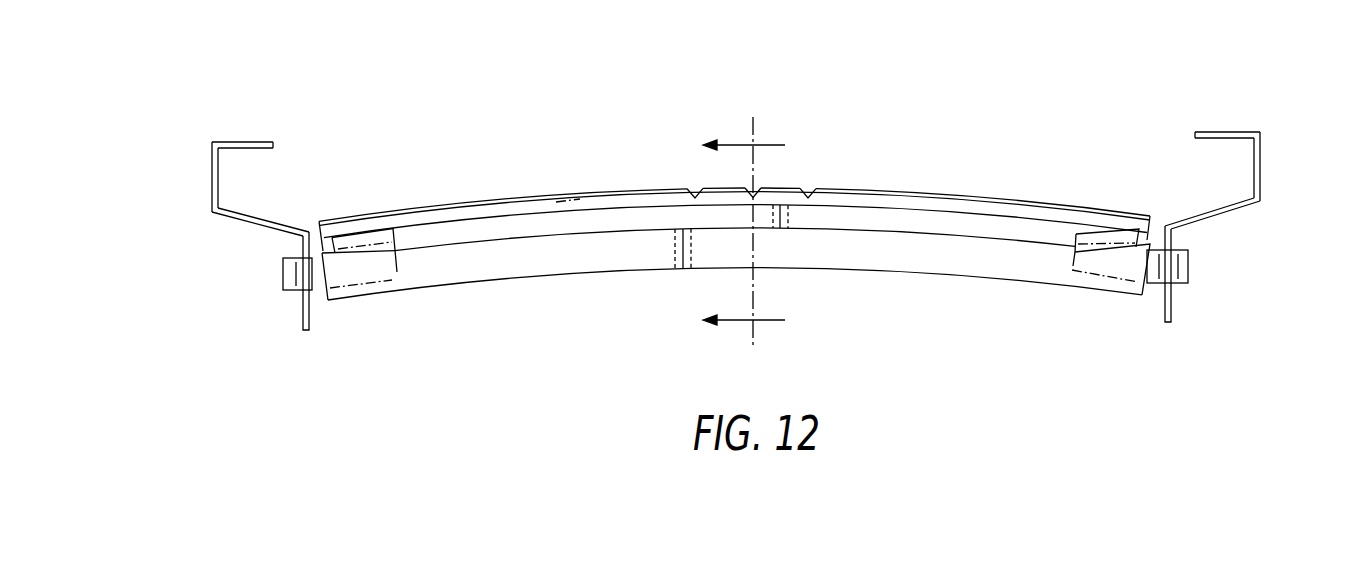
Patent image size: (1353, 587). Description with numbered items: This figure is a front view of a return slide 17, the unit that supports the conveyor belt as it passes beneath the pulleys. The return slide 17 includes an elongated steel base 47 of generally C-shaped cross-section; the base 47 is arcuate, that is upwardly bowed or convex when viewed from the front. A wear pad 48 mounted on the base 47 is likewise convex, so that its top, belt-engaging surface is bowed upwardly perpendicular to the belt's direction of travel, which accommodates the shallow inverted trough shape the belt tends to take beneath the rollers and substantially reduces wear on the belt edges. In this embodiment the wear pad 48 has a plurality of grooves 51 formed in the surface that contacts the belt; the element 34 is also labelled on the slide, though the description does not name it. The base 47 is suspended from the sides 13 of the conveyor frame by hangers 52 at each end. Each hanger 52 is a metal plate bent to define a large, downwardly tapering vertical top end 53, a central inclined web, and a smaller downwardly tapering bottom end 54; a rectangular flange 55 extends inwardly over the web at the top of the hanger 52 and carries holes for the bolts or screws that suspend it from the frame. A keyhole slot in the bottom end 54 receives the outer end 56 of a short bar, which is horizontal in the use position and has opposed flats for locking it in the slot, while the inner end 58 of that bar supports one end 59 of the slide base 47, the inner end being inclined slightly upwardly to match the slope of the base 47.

The sides of the conveyor frame 13 is at (754, 238).
The return slide 17 is at (348, 375).
The upper beam member 34 is at (953, 220).
The base 47 is at (520, 260).
The wear pad 48 is at (594, 197).
The grooves 51 is at (688, 189).
The hanger 52 is at (215, 213).
The top end 53 is at (208, 170).
The bottom end 54 is at (305, 318).
The flange 55 is at (250, 142).
The outer end of the bar 56 is at (287, 270).
The inner end of the bar 58 is at (397, 272).
The end of the slide base 59 is at (355, 295).